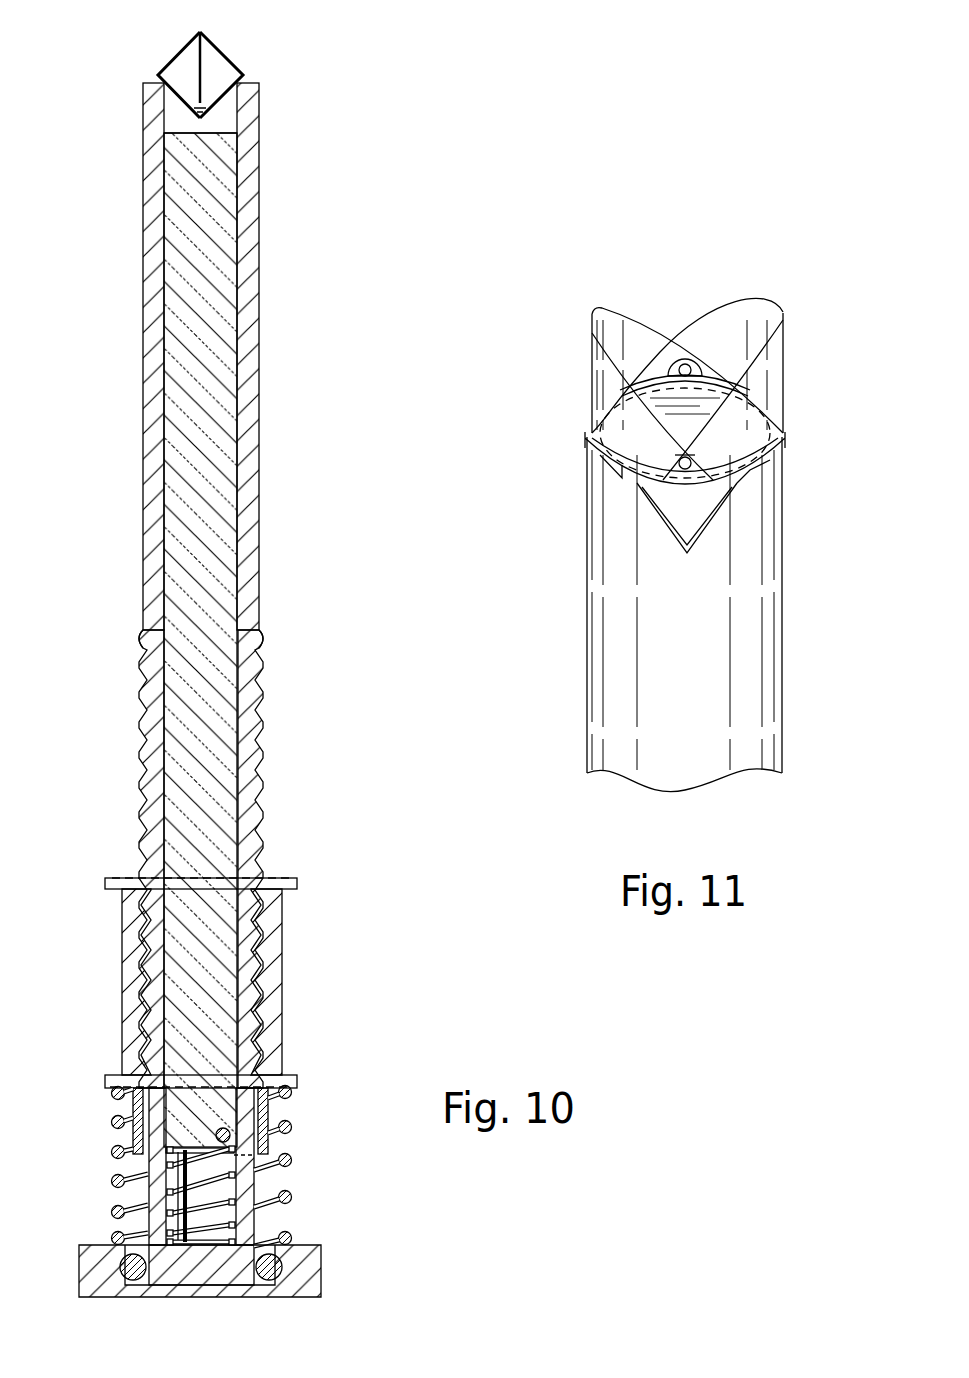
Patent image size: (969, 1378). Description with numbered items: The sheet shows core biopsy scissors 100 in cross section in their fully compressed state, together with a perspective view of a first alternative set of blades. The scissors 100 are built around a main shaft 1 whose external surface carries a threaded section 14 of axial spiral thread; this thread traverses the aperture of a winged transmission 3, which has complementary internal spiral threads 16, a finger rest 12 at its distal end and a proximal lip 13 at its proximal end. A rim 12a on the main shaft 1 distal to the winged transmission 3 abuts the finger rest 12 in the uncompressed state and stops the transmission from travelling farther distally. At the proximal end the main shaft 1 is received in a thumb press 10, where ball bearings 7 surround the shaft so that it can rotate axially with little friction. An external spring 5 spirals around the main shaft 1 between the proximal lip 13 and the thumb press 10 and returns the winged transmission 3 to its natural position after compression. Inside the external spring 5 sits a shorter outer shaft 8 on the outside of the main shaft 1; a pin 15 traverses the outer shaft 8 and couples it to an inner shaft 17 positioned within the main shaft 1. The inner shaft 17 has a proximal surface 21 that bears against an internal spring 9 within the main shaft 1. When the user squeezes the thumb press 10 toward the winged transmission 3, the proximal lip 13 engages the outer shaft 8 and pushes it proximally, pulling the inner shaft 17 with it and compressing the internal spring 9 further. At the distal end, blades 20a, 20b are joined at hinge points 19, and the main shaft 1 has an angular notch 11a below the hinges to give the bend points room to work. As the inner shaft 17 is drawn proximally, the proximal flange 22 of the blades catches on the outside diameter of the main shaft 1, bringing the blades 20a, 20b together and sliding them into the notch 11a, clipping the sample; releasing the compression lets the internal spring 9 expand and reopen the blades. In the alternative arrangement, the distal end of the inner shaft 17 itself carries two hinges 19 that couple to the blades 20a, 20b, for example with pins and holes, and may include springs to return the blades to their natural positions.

In FIG. 10, the main shaft 1 is at (262, 230).
In FIG. 11, the main shaft 1 is at (783, 655).
In FIG. 10, the winged transmission 3 is at (283, 1020).
In FIG. 10, the external spring 5 is at (289, 1160).
In FIG. 10, the ball bearings 7 is at (275, 1260).
In FIG. 10, the outer shaft 8 is at (130, 1137).
In FIG. 10, the internal spring 9 is at (228, 1205).
In FIG. 10, the thumb press 10 is at (321, 1285).
In FIG. 11, the angular notch 11a is at (667, 530).
In FIG. 10, the finger rest 12 is at (297, 882).
In FIG. 10, the rim 12a is at (265, 640).
In FIG. 10, the proximal lip 13 is at (297, 1078).
In FIG. 10, the threaded section 14 is at (251, 930).
In FIG. 10, the pin 15 is at (228, 1135).
In FIG. 10, the internal spiral threads 16 is at (271, 972).
In FIG. 11, the inner shaft 17 is at (700, 500).
In FIG. 10, the hinge points 19 is at (202, 107).
In FIG. 11, the hinge points 19 is at (700, 455).
In FIG. 10, the blade 20a is at (235, 60).
In FIG. 11, the blade 20a is at (783, 350).
In FIG. 10, the blade 20b is at (175, 63).
In FIG. 11, the blade 20b is at (590, 370).
In FIG. 10, the proximal surface 21 is at (180, 1170).
In FIG. 10, the proximal flange 22 is at (177, 97).
In FIG. 11, the proximal flange 22 is at (620, 478).
In FIG. 10, the core biopsy scissors 100 is at (318, 712).